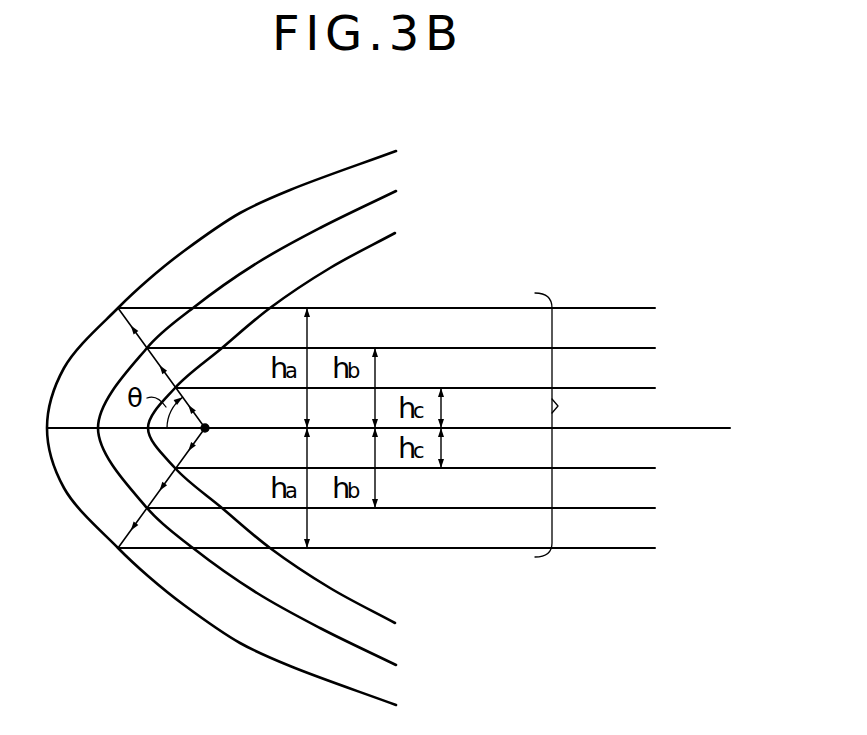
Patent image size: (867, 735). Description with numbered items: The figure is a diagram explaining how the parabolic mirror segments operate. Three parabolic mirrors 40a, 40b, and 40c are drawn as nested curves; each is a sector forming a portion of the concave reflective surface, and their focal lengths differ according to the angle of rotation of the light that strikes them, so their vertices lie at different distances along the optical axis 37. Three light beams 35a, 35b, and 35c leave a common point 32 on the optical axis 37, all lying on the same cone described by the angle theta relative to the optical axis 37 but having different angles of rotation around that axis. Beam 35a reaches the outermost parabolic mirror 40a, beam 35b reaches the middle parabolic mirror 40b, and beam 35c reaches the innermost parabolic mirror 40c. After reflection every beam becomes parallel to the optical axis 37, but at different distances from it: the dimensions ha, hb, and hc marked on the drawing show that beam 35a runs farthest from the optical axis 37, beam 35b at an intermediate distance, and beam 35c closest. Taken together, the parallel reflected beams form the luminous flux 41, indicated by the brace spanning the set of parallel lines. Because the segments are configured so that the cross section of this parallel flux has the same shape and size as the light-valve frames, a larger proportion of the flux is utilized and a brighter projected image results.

The focal point 32 is at (208, 431).
The light beam 35a is at (425, 303).
The light beam 35b is at (440, 340).
The light beam 35c is at (453, 383).
The optical axis 37 is at (693, 428).
The parabolic mirror 40a is at (260, 415).
The parabolic mirror 40b is at (286, 417).
The parabolic mirror 40c is at (310, 416).
The luminous flux 41 is at (566, 425).